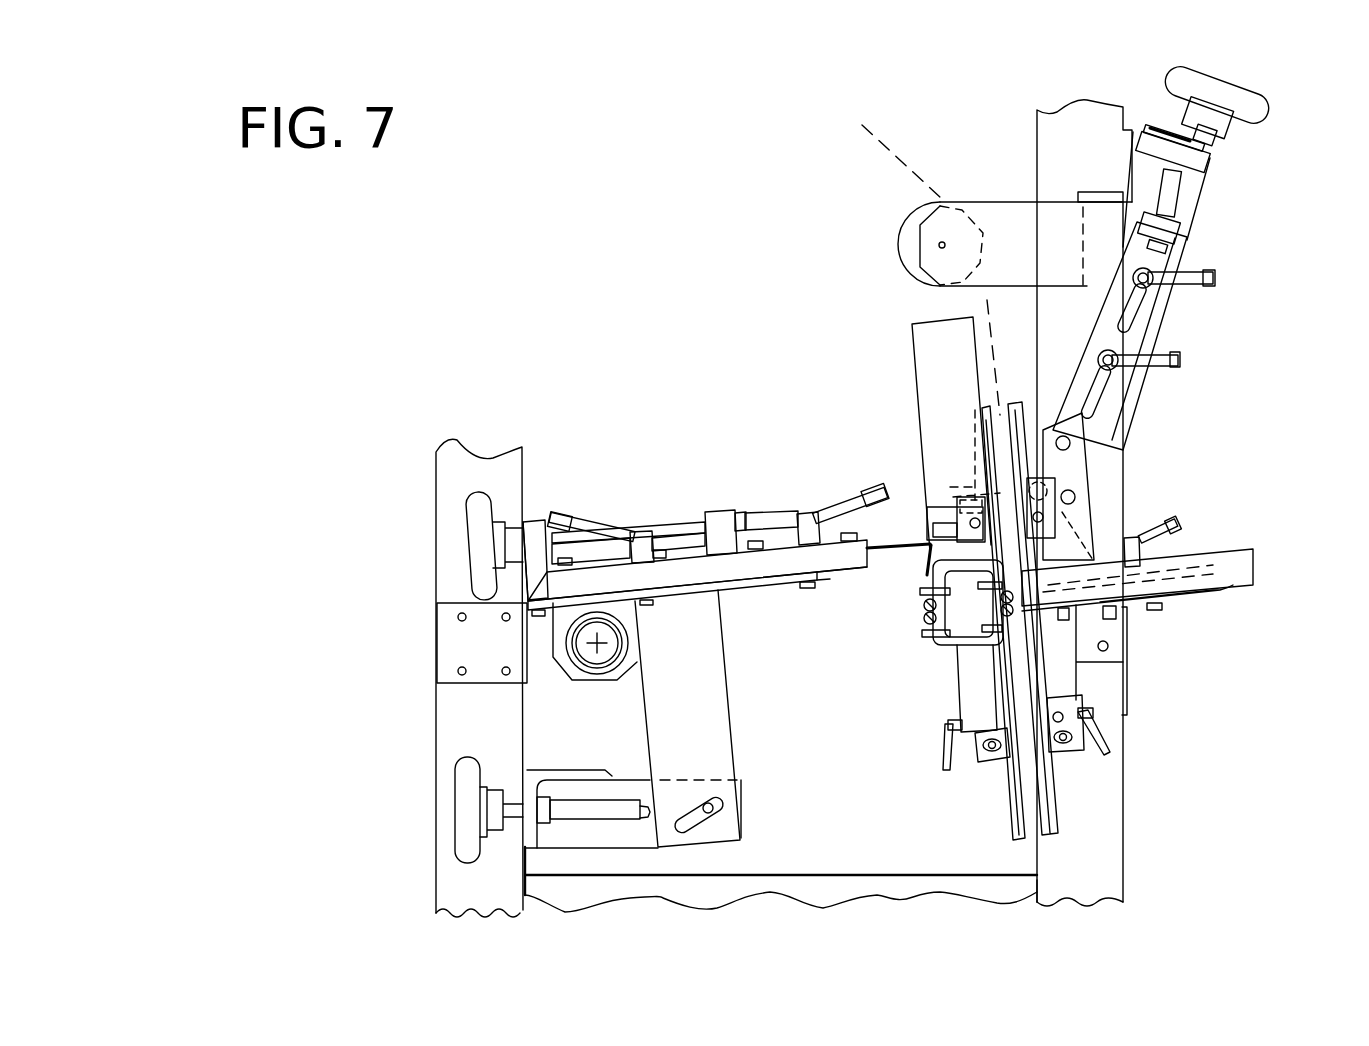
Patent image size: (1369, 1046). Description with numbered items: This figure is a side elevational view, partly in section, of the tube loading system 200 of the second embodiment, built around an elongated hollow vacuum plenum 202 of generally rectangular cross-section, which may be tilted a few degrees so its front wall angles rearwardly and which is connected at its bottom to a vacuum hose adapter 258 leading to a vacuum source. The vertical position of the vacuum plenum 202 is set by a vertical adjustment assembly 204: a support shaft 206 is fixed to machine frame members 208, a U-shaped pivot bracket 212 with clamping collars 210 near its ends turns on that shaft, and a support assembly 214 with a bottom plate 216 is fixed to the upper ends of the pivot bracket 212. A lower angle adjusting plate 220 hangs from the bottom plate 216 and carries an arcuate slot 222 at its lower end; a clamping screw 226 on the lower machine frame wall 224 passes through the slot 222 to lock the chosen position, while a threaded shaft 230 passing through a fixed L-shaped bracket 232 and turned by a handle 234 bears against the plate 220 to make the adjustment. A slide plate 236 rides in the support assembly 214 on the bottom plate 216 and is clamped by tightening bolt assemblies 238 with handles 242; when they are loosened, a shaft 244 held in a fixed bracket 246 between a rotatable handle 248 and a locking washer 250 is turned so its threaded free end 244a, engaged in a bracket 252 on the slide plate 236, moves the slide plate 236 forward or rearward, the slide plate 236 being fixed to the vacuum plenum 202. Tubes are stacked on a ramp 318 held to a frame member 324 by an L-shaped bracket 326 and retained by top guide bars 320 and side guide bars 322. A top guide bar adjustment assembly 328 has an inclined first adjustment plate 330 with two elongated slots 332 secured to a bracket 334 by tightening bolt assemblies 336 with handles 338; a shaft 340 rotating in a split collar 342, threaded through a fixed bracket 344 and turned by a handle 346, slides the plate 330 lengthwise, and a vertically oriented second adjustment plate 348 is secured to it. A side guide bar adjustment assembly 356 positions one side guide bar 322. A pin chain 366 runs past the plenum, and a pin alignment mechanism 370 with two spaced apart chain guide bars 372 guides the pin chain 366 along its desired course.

The tube loading system 200 is at (730, 350).
The vacuum plenum 202 is at (940, 650).
The vertical adjustment assembly 204 is at (684, 480).
The support shaft 206 is at (600, 658).
The machine frame members 208 is at (537, 660).
The clamping collars 210 is at (566, 650).
The pivot bracket 212 is at (630, 612).
The support assembly 214 is at (784, 606).
The bottom plate 216 is at (830, 585).
The lower angle adjusting plate 220 is at (697, 733).
The arcuate slot 222 is at (688, 840).
The lower machine frame wall 224 is at (617, 792).
The clamping screw 226 is at (712, 806).
The threaded shaft 230 is at (590, 813).
The L-shaped bracket 232 is at (542, 772).
The handle 234 is at (467, 817).
The slide plate 236 is at (877, 560).
The tightening bolt assemblies 238 is at (638, 530).
The handles 242 is at (553, 517).
The shaft 244 is at (720, 520).
The free end 244a is at (743, 513).
The fixed bracket 246 is at (536, 528).
The rotatable handle 248 is at (484, 536).
The locking washer 250 is at (548, 545).
The bracket 252 is at (740, 503).
The vacuum hose adapter 258 is at (963, 698).
The ramp 318 is at (1197, 597).
The top guide bars 320 is at (1222, 570).
The side guide bars 322 is at (1215, 549).
The frame member 324 is at (1103, 860).
The L-shaped bracket 326 is at (1127, 687).
The top guide bar adjustment assembly 328 is at (1218, 242).
The first adjustment plate 330 is at (1143, 312).
The elongated slots 332 is at (1127, 330).
The bracket 334 is at (1187, 203).
The tightening bolt assemblies 336 is at (1089, 336).
The handles 338 is at (1206, 278).
The shaft 340 is at (1200, 133).
The split collar 342 is at (1157, 237).
The fixed bracket 344 is at (1153, 144).
The handle 346 is at (1207, 86).
The second adjustment plate 348 is at (1045, 430).
The side guide bar adjustment assembly 356 is at (1146, 511).
The pin chain 366 is at (901, 164).
The pin alignment mechanism 370 is at (1000, 822).
The chain guide bars 372 is at (1007, 793).